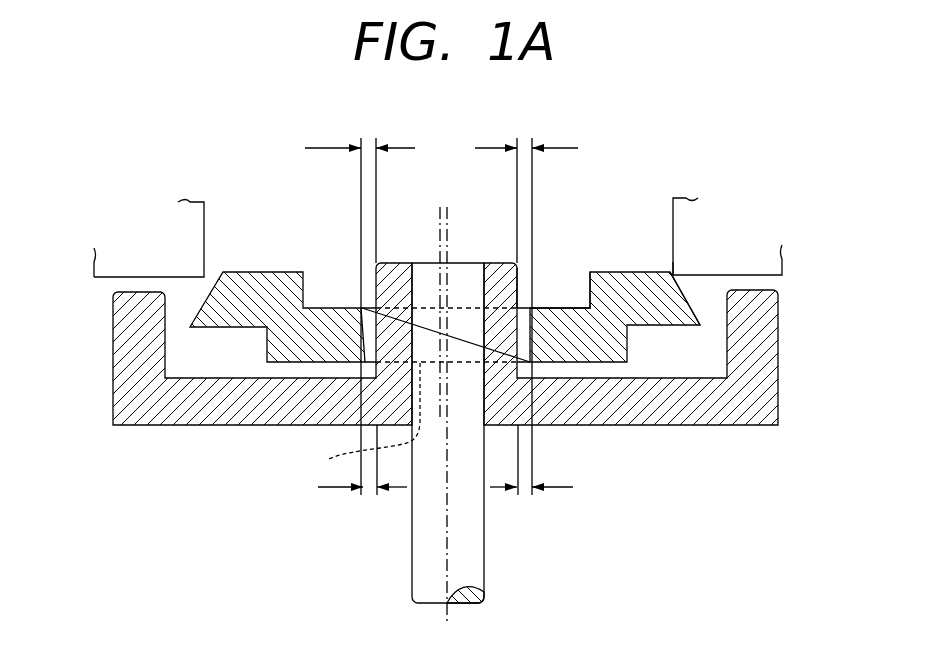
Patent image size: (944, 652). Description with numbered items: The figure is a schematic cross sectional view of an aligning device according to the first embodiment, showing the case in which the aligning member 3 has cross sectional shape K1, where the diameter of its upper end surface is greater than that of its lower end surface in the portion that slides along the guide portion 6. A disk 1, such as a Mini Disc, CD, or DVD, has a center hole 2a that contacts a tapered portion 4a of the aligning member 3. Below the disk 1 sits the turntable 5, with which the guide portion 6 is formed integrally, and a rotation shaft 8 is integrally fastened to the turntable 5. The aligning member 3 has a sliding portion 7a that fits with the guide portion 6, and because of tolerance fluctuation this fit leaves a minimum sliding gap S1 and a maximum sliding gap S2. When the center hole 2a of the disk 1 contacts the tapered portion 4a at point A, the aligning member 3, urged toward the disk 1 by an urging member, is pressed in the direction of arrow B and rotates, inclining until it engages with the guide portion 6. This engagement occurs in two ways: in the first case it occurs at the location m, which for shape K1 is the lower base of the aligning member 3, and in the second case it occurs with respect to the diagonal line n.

The disk 1 is at (733, 228).
The center hole 2a is at (205, 222).
The aligning member 3 is at (585, 347).
The tapered portion 4a is at (215, 288).
The turntable 5 is at (731, 412).
The guide portion 6 is at (518, 285).
The sliding portion 7a is at (521, 302).
The rotation shaft 8 is at (472, 562).
The contact point A is at (672, 275).
The pressing direction arrow B is at (644, 288).
The engagement location at lower base m is at (362, 419).
The diagonal line n is at (425, 328).
The minimum sliding gap S1 is at (448, 473).
The maximum sliding gap S2 is at (444, 306).